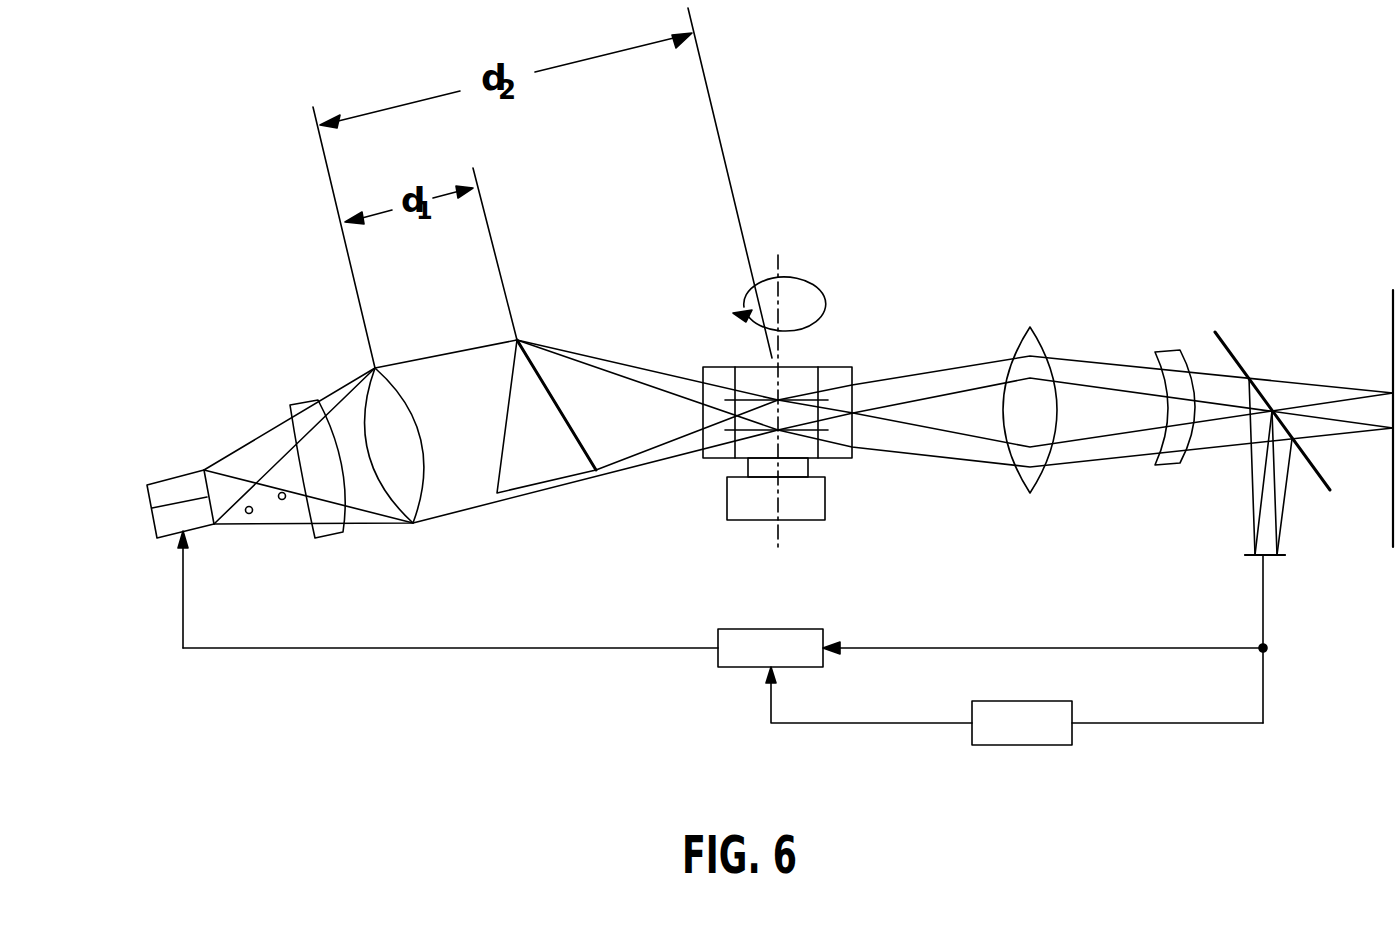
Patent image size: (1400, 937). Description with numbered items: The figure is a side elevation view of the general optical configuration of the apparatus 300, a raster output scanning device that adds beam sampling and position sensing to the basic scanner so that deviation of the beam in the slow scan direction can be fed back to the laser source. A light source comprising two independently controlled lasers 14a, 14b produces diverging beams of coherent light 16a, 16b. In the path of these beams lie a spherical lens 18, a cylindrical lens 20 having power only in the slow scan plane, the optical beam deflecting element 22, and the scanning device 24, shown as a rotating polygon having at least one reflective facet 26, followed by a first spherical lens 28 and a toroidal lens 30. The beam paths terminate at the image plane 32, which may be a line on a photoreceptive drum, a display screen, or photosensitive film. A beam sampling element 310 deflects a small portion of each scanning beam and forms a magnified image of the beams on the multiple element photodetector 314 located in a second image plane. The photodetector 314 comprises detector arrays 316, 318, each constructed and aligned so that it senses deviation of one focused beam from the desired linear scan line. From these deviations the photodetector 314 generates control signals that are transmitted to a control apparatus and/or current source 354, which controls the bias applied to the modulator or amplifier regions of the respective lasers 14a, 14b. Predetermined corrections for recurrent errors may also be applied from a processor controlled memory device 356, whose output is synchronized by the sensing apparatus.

The laser emitter 14a is at (162, 490).
The laser emitter 14b is at (167, 530).
The diverging beam of coherent light 16a is at (282, 500).
The diverging beam of coherent light 16b is at (250, 514).
The spherical lens 18 is at (300, 402).
The cylindrical lens 20 is at (375, 368).
The optical beam deflecting element 22 is at (517, 340).
The scanning device 24 is at (713, 460).
The reflective facet 26 is at (805, 378).
The first spherical lens 28 is at (1030, 483).
The toroidal lens 30 is at (1175, 462).
The image plane 32 is at (1393, 500).
The apparatus 300 is at (1124, 214).
The beam sampling element 310 is at (1225, 343).
The multiple element photodetector 314 is at (1247, 542).
The detector array 316 is at (1252, 557).
The detector array 318 is at (1278, 557).
The control apparatus and/or current source 354 is at (792, 632).
The processor controlled memory device 356 is at (1013, 745).